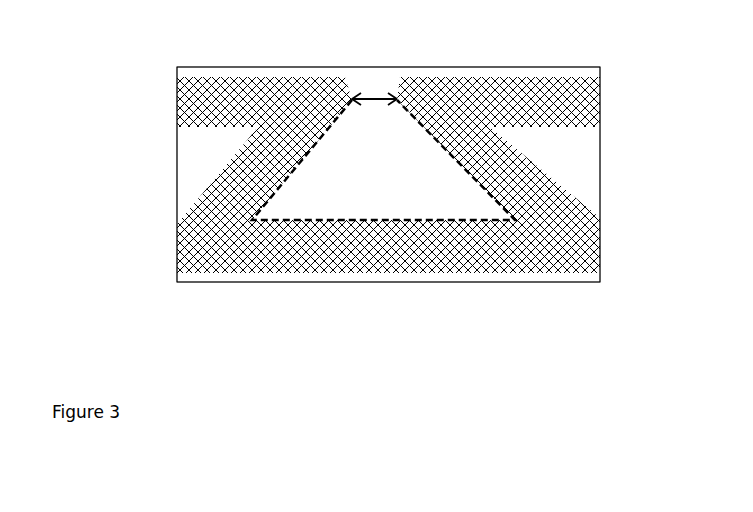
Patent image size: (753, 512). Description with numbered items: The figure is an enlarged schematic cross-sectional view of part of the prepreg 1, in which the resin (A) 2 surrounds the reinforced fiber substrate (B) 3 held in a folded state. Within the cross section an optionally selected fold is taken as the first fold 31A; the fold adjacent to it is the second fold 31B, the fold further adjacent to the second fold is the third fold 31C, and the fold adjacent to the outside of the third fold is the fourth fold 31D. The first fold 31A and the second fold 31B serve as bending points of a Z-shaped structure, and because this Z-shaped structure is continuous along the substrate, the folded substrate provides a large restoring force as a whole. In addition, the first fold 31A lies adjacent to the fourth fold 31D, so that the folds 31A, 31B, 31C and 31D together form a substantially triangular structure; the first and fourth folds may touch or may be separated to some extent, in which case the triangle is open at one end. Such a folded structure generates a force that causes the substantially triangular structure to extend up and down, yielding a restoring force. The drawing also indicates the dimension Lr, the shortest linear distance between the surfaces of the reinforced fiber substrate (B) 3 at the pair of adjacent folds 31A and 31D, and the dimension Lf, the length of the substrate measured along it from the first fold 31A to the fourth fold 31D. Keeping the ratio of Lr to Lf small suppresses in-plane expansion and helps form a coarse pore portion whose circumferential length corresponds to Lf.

The prepreg 1 is at (132, 127).
The resin (A) 2 is at (192, 183).
The reinforced fiber substrate (B) 3 is at (381, 143).
The first fold 31A is at (335, 90).
The second fold 31B is at (180, 248).
The third fold 31C is at (583, 247).
The fourth fold 31D is at (400, 98).
The linear distance between first fold and fourth fold Lr is at (373, 98).
The distance along reinforced fiber substrate between first fold and fourth fold Lf is at (473, 182).